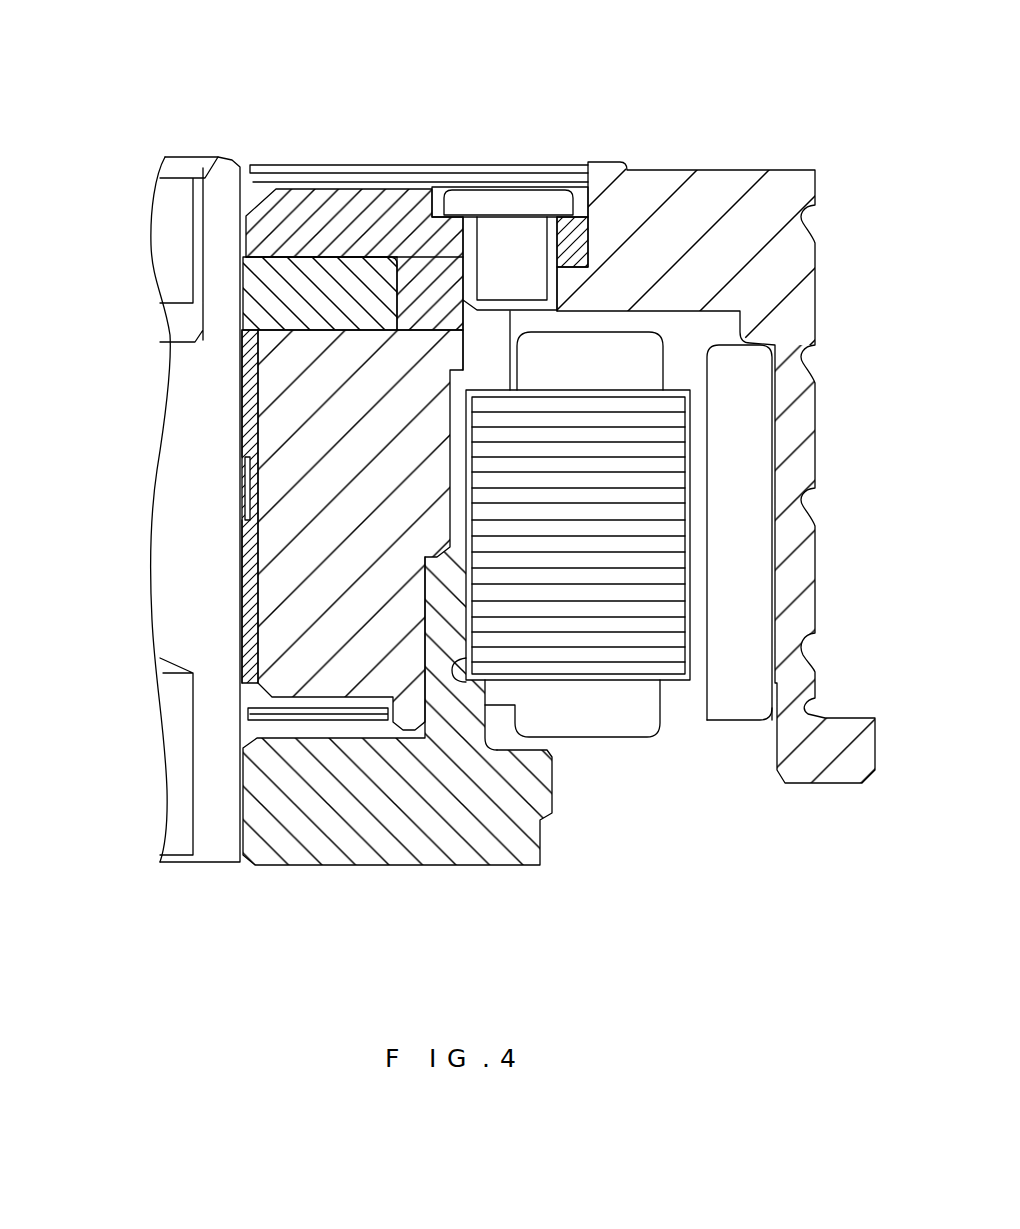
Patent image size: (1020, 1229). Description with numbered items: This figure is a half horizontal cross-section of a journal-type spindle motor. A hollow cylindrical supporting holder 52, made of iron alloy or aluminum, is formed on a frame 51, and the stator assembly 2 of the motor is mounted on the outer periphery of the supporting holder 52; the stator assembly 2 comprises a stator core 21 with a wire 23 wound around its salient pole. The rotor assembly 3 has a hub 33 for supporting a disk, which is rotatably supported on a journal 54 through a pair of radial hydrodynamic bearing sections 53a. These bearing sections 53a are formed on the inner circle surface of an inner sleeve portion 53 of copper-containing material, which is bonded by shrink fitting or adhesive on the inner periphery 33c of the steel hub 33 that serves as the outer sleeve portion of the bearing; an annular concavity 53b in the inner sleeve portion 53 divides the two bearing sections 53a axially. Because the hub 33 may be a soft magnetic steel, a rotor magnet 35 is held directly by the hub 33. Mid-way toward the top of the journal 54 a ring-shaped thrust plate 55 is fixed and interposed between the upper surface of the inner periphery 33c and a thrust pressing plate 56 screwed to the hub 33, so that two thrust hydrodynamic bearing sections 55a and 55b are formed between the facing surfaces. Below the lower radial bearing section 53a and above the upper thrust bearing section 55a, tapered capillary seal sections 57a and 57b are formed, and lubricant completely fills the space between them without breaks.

The stator assembly 2 is at (687, 631).
The rotor assembly 3 is at (712, 170).
The stator core 21 is at (808, 532).
The wire 23 is at (653, 728).
The hub 33 is at (561, 584).
The inner periphery of the hub 33c is at (268, 865).
The rotor magnet 35 is at (740, 563).
The frame 51 is at (427, 750).
The supporting holder 52 is at (487, 705).
The inner sleeve portion 53 is at (137, 506).
The radial hydrodynamic bearing section 53a is at (243, 403).
The annular concavity 53b is at (243, 487).
The journal 54 is at (148, 459).
The thrust plate 55 is at (286, 287).
The upper thrust hydrodynamic bearing section 55a is at (325, 325).
The lower thrust hydrodynamic bearing section 55b is at (430, 187).
The thrust pressing plate 56 is at (343, 200).
The lower capillary seal section 57a is at (247, 695).
The upper capillary seal section 57b is at (247, 228).